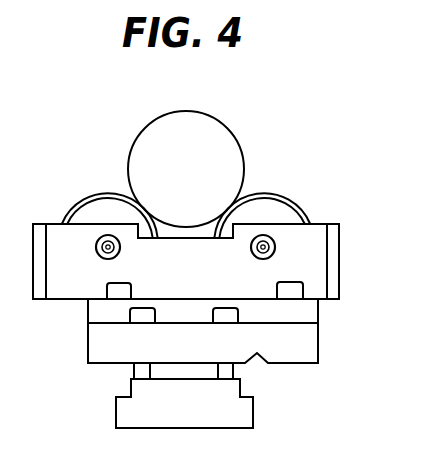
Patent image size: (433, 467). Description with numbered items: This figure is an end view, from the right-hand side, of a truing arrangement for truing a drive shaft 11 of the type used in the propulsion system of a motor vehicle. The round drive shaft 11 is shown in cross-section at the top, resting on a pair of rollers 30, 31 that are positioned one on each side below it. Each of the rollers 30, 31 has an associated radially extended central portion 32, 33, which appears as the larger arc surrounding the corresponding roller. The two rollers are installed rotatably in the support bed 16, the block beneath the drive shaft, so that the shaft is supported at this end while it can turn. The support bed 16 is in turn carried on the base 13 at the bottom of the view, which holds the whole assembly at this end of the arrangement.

The drive shaft 11 is at (217, 135).
The base 13 is at (243, 409).
The support bed 16 is at (318, 253).
The roller 30 is at (88, 213).
The roller 31 is at (275, 207).
The radially extended central portion 32 is at (99, 192).
The radially extended central portion 33 is at (305, 208).